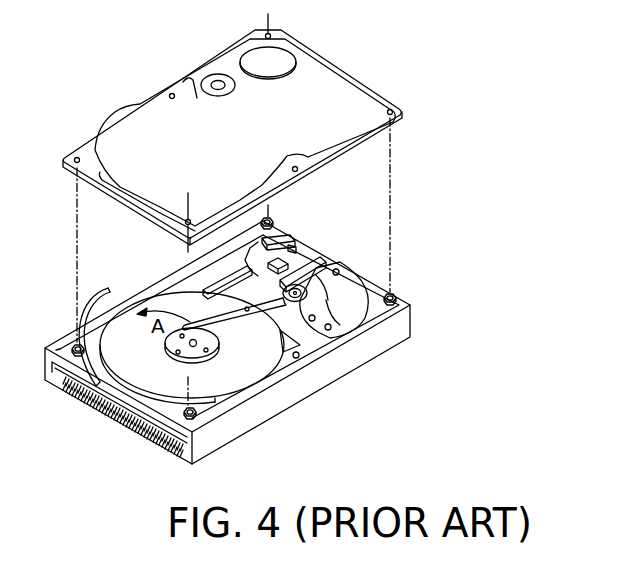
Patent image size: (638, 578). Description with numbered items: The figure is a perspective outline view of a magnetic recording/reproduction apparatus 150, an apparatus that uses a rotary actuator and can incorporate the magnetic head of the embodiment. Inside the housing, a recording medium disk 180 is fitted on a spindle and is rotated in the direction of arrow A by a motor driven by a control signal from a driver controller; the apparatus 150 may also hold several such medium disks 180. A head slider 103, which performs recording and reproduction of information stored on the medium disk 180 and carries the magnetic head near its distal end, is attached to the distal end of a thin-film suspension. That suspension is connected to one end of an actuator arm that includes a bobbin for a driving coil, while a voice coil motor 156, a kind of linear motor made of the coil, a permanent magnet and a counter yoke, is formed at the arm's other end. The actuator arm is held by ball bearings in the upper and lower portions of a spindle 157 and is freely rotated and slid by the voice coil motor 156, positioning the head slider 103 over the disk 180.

The magnetic recording/reproduction apparatus 150 is at (153, 75).
The recording medium disk 180 is at (119, 322).
The head slider 103 is at (186, 325).
The spindle 157 is at (296, 290).
The voice coil motor 156 is at (345, 320).